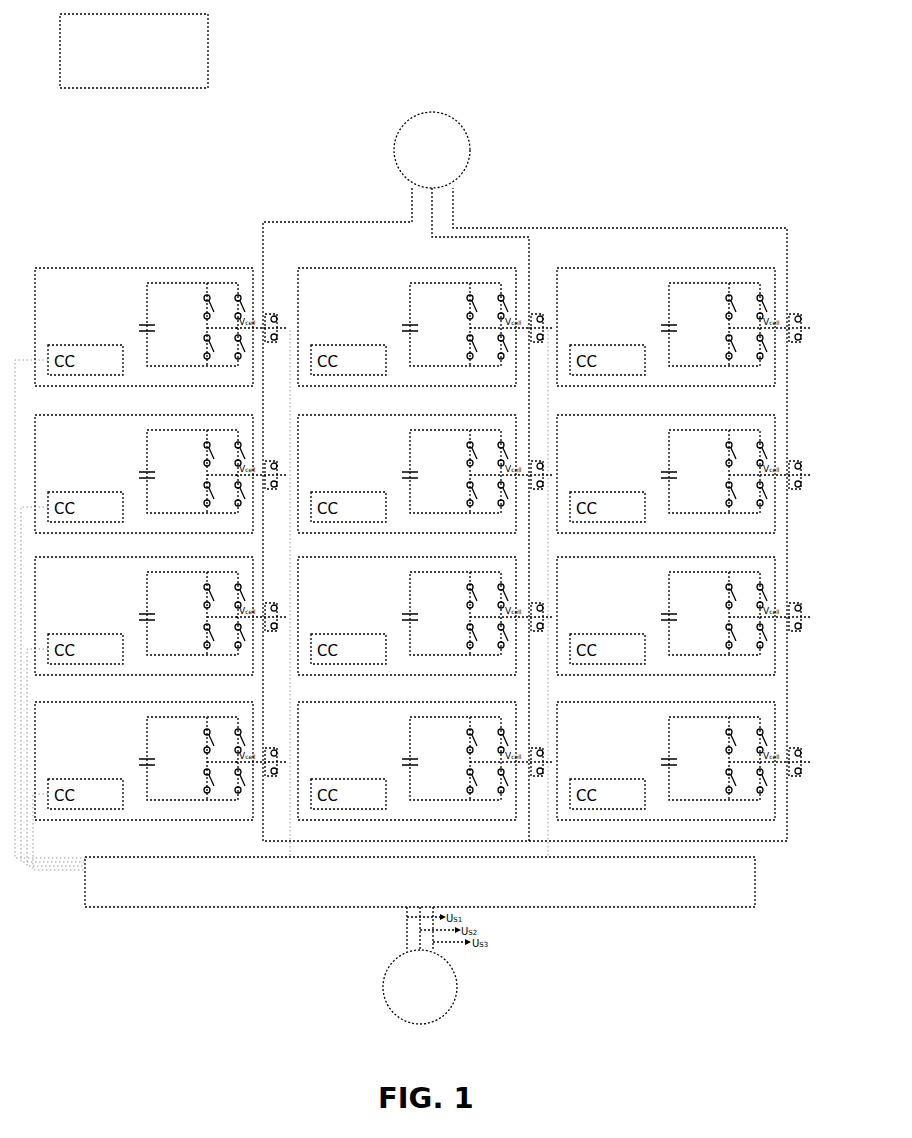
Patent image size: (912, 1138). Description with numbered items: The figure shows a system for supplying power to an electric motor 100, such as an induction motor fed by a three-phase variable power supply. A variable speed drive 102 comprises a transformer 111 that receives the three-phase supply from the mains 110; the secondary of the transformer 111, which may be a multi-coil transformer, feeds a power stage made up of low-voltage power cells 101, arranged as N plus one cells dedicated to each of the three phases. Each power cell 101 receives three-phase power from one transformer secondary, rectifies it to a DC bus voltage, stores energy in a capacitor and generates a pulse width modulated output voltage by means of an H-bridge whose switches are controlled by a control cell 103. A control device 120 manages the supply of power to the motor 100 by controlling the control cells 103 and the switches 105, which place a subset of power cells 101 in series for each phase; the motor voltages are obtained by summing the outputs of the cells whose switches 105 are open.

The electric motor 100 is at (432, 150).
The power cell 101 is at (405, 544).
The variable speed drive 102 is at (181, 250).
The control cell 103 is at (346, 577).
The switch 105 is at (796, 778).
The mains 110 is at (420, 987).
The transformer 111 is at (420, 882).
The control device 120 is at (134, 51).